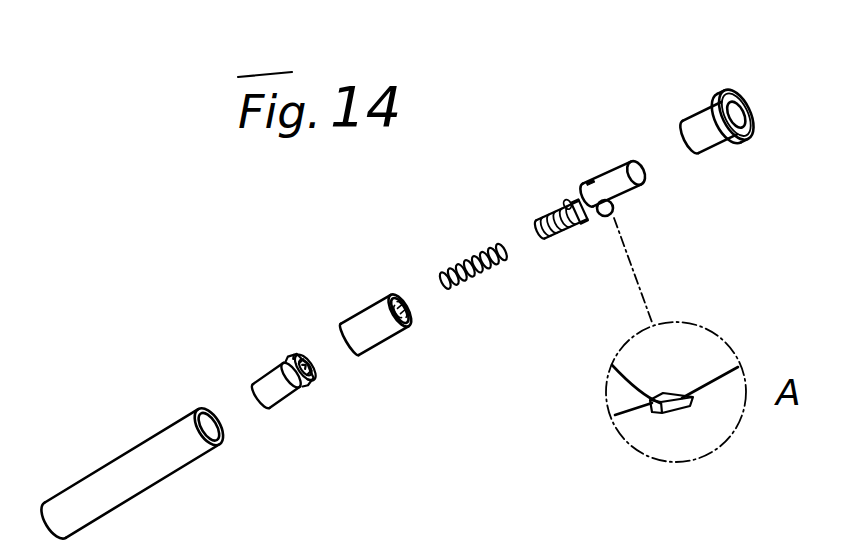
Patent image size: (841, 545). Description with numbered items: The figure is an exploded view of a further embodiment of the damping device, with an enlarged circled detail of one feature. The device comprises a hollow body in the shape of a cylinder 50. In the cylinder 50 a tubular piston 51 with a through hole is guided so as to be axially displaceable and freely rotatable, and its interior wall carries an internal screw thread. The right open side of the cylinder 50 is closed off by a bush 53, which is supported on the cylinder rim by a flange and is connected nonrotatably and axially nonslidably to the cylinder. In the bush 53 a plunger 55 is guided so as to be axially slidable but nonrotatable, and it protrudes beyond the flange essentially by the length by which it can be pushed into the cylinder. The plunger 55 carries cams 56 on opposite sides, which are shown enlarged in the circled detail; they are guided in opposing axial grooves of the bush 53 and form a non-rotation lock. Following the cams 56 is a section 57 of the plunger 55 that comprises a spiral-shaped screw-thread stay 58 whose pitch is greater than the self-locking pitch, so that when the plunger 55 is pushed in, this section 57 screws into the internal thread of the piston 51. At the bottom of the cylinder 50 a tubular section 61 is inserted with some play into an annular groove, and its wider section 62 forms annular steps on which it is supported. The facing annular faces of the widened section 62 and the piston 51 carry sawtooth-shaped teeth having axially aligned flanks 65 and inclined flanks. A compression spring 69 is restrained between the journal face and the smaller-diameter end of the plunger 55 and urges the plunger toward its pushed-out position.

The cylinder 50 is at (127, 460).
The piston 51 is at (368, 318).
The bush 53 is at (704, 126).
The plunger 55 is at (620, 183).
The cams 56 is at (685, 408).
The section of the plunger 57 is at (599, 213).
The screw-thread stay 58 is at (562, 204).
The tubular section 61 is at (257, 375).
The wider section 62 is at (290, 370).
The flanks 65 is at (688, 335).
The compression spring 69 is at (466, 268).